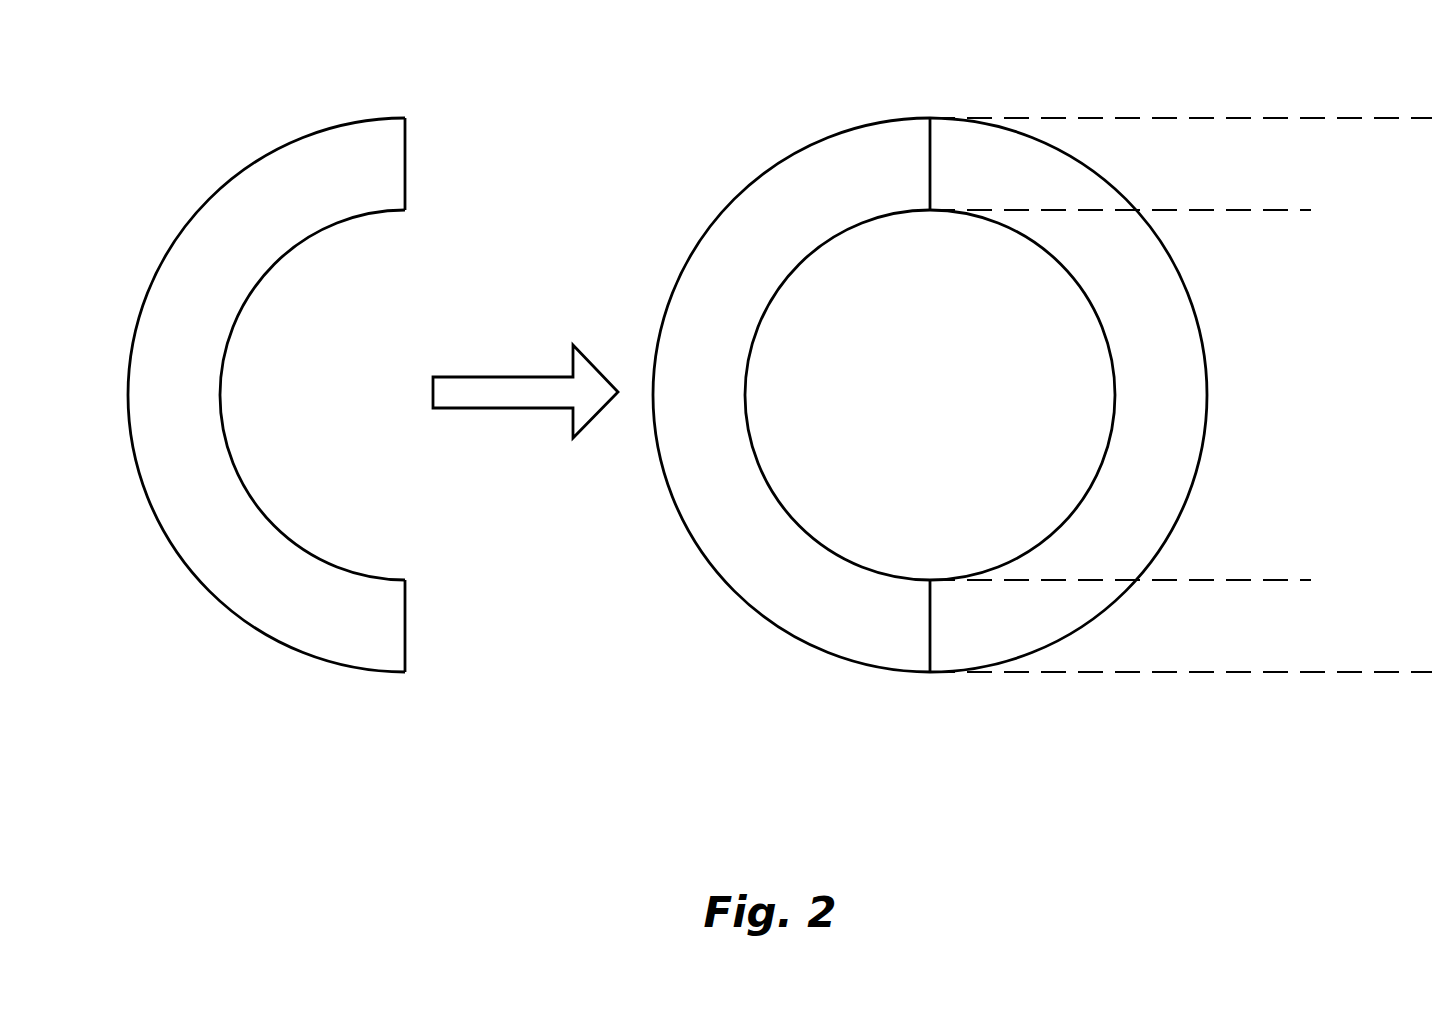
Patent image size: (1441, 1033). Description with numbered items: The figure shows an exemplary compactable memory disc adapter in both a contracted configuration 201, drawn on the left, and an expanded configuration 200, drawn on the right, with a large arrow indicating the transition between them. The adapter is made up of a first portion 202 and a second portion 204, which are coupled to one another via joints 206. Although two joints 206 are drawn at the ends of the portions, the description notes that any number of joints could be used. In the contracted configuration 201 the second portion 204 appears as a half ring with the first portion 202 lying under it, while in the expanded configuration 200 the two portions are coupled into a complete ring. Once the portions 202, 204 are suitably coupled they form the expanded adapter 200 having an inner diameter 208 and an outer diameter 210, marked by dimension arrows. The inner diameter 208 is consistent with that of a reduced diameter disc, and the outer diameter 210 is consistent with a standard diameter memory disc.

The expanded configuration 200 is at (646, 438).
The contracted configuration 201 is at (656, 447).
The first portion 202 is at (673, 410).
The second portion 204 is at (228, 300).
The joints 206 is at (405, 163).
The inner diameter 208 is at (1299, 232).
The outer diameter 210 is at (1415, 140).